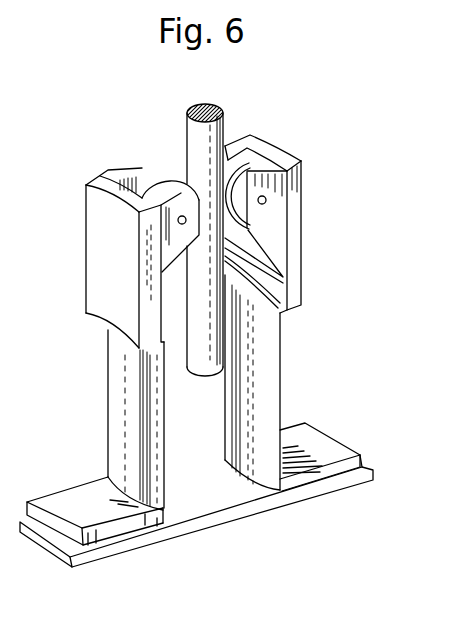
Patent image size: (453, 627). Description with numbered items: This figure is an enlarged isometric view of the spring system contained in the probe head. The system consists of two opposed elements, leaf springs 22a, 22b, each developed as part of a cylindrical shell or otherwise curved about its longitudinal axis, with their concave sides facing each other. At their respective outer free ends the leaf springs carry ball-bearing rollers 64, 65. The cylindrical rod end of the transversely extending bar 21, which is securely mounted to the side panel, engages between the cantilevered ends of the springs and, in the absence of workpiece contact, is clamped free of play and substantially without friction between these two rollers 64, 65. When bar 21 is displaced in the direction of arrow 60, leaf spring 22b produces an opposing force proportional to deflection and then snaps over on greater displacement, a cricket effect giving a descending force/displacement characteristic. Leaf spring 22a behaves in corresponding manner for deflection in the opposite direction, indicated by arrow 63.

The transversely extending bar 21 is at (187, 116).
The arrow indicating direction of bar displacement 60 is at (283, 100).
The arrow indicating opposite direction of deflection 63 is at (170, 130).
The ball-bearing roller 64 is at (250, 171).
The ball-bearing roller 65 is at (165, 181).
The leaf spring 22a is at (108, 396).
The leaf spring 22b is at (265, 377).